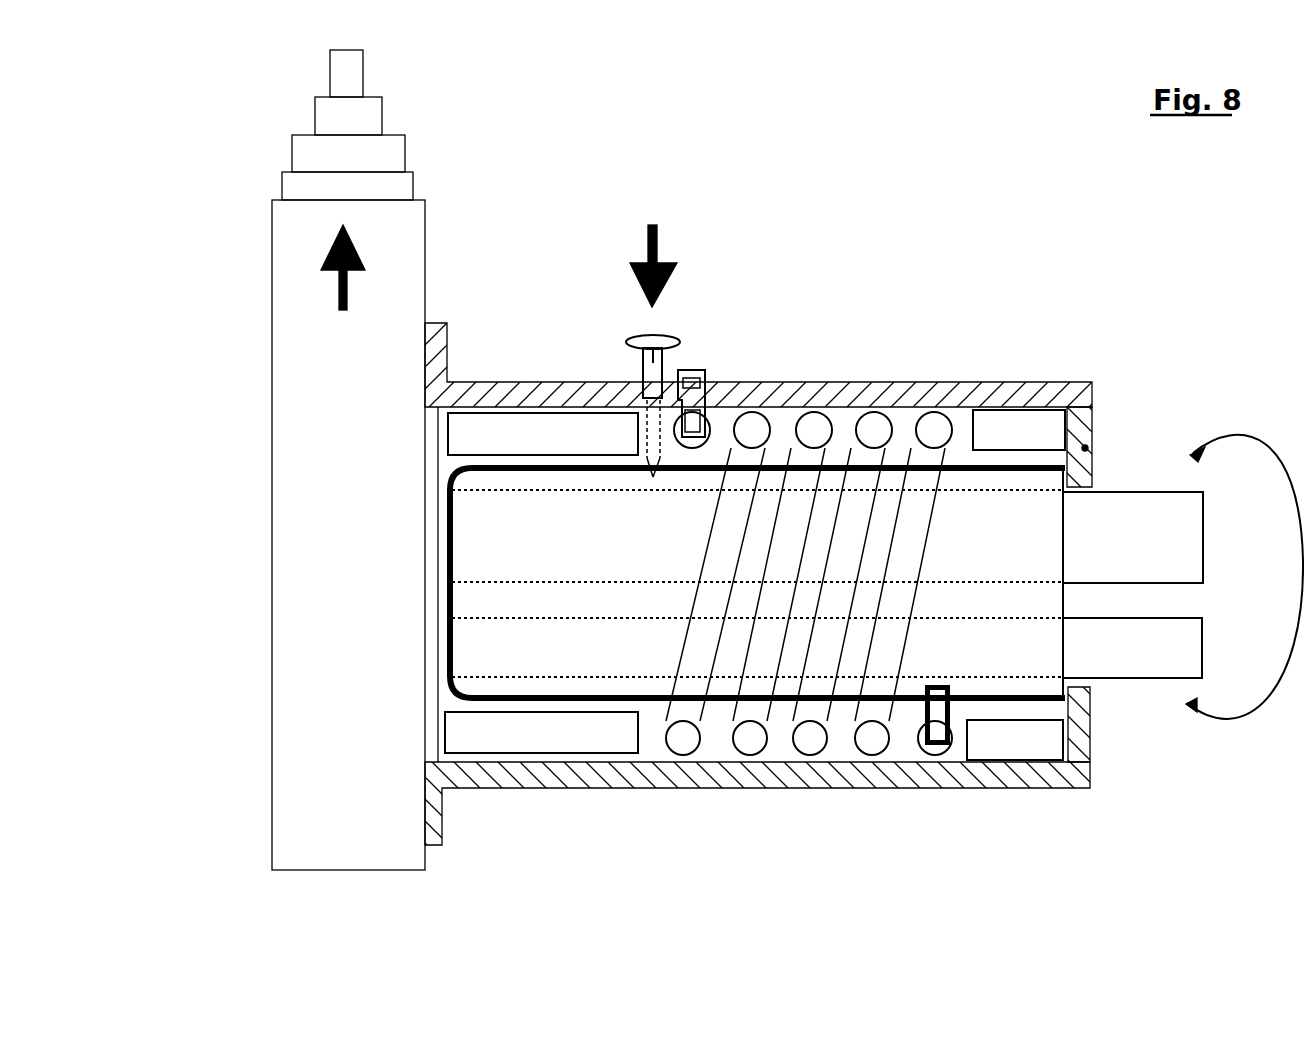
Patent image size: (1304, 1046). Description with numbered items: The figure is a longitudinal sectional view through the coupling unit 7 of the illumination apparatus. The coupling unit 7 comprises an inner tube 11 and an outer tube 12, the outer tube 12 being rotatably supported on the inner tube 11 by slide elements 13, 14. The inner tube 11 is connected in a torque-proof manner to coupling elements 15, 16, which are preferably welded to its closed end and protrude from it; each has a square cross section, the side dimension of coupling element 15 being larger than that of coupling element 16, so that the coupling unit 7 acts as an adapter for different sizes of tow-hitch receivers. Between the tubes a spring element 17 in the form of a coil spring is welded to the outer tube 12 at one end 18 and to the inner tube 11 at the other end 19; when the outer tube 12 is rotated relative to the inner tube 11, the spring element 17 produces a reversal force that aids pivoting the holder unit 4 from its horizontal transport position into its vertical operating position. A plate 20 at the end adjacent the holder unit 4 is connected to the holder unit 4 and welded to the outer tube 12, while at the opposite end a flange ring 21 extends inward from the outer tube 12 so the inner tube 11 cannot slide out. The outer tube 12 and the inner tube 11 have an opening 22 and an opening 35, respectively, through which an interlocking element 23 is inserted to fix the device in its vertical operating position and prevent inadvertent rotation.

The holder unit 4 is at (302, 453).
The coupling unit 7 is at (895, 310).
The inner tube 11 is at (960, 468).
The outer tube 12 is at (1075, 403).
The slide element 13 is at (492, 420).
The slide element 14 is at (1000, 437).
The coupling element 15 is at (1123, 538).
The coupling element 16 is at (1140, 660).
The spring element 17 is at (816, 430).
The end 18 is at (690, 427).
The end 19 is at (936, 745).
The plate 20 is at (432, 669).
The flange ring 21 is at (1085, 448).
The opening 22 is at (656, 387).
The interlocking element 23 is at (655, 335).
The opening 35 is at (648, 475).